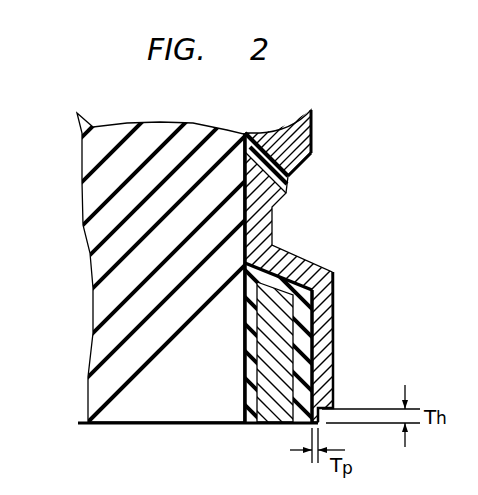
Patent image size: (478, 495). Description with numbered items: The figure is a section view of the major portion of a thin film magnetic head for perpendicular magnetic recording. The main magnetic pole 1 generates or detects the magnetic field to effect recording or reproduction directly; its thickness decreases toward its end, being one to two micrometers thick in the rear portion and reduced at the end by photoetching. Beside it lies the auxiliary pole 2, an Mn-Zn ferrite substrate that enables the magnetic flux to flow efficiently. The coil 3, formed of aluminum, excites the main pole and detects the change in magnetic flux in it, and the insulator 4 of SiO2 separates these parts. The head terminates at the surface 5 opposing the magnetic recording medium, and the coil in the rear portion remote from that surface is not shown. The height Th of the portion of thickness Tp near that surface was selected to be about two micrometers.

The main magnetic pole 1 is at (322, 394).
The auxiliary pole 2 is at (95, 252).
The coil 3 is at (314, 167).
The insulator 4 is at (268, 163).
The surface opposing the magnetic recording medium 5 is at (127, 424).